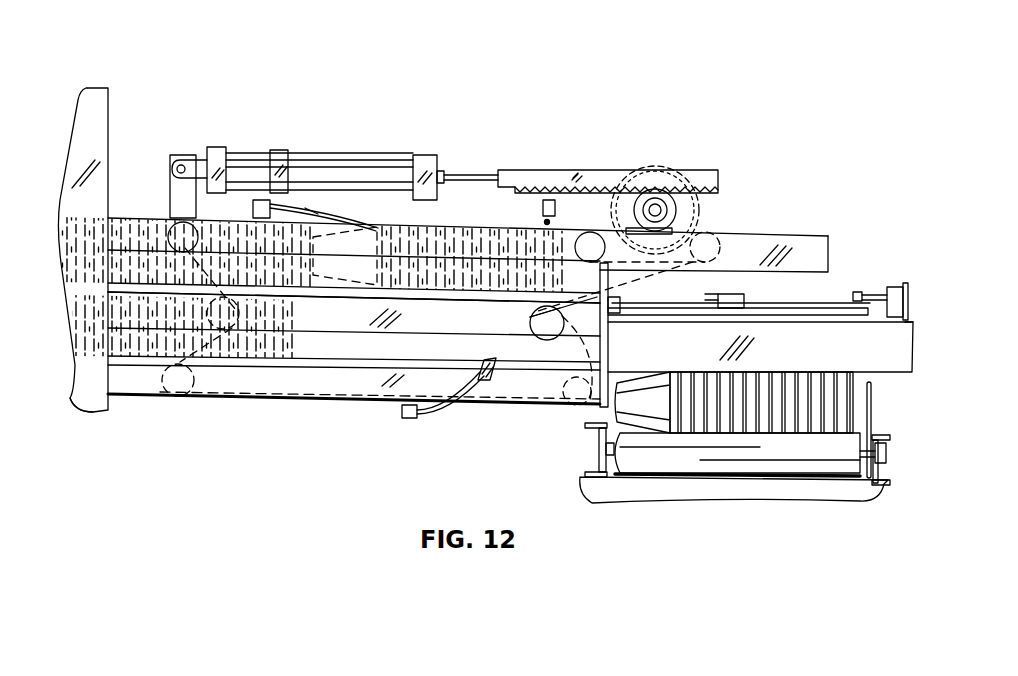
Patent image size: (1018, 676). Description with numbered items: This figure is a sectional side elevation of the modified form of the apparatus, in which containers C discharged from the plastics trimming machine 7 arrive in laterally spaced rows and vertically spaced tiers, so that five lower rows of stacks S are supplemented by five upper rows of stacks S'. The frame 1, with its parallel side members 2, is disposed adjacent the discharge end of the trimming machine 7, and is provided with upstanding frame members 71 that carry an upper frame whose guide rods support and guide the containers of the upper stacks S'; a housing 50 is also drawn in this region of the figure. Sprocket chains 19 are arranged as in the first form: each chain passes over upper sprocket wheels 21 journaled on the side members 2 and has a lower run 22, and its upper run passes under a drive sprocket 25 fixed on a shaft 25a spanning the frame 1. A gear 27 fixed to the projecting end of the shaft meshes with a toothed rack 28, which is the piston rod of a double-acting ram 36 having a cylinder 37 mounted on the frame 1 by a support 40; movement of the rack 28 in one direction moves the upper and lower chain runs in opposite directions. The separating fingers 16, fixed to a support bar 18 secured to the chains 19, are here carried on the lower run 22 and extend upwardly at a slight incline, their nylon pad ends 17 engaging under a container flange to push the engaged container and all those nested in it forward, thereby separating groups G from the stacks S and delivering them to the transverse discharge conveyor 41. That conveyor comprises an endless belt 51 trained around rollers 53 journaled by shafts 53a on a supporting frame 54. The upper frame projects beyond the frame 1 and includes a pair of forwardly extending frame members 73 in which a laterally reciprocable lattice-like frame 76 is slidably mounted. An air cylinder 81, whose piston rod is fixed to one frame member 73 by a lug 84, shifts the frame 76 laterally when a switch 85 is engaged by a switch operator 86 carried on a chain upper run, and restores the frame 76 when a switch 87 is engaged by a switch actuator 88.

The frame 1 is at (813, 238).
The side member 2 is at (823, 250).
The plastics trimming machine 7 is at (83, 392).
The separating finger 16 is at (352, 210).
The nylon pad end 17 is at (493, 362).
The support bar 18 is at (250, 200).
The sprocket chain 19 is at (553, 355).
The upper sprocket wheel 21 is at (177, 237).
The lower run 22 is at (300, 400).
The drive sprocket 25 is at (650, 167).
The shaft 25a is at (658, 213).
The gear 27 is at (673, 210).
The toothed rack 28 is at (537, 172).
The double-acting ram 36 is at (467, 178).
The cylinder 37 is at (250, 160).
The support 40 is at (173, 192).
The discharge conveyor 41 is at (860, 498).
The housing box 50 is at (907, 337).
The endless belt 51 is at (698, 455).
The roller 53 is at (600, 463).
The shaft 53a is at (597, 443).
The supporting frame 54 is at (890, 480).
The upstanding frame member 71 is at (610, 352).
The forwardly extending frame member 73 is at (913, 322).
The lattice-like frame 76 is at (803, 310).
The air cylinder 81 is at (743, 295).
The lug 84 is at (707, 298).
The switch 85 is at (563, 182).
The switch operator 86 is at (307, 210).
The switch 87 is at (897, 288).
The switch actuator 88 is at (860, 293).
The flange F is at (100, 113).
The stack S is at (158, 326).
The upper stack S' is at (287, 254).
The container C is at (493, 240).
The group G is at (470, 290).